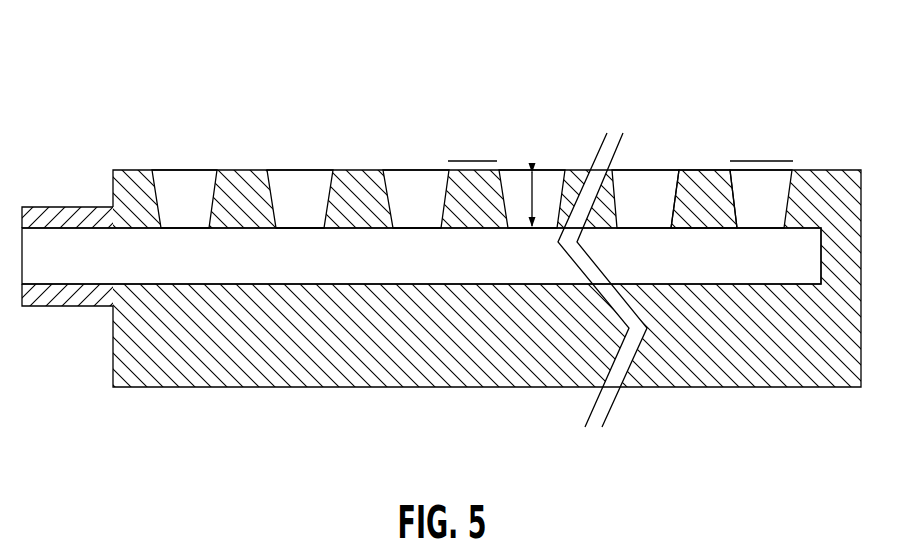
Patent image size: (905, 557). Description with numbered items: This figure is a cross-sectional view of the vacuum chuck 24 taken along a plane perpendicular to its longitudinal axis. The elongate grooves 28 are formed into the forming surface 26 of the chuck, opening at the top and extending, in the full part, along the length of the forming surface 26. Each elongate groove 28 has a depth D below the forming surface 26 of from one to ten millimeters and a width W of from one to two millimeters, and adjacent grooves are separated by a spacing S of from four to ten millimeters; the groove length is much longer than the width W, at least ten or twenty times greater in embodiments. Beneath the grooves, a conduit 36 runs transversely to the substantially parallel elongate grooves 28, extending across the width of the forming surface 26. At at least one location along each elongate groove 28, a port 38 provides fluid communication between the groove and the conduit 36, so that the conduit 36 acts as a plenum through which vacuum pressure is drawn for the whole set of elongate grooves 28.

The vacuum chuck 24 is at (140, 98).
The forming surface 26 is at (708, 171).
The elongate grooves 28 is at (190, 194).
The conduit 36 is at (210, 250).
The port 38 is at (412, 228).
The spacing S is at (475, 160).
The depth D is at (533, 198).
The width W is at (760, 161).